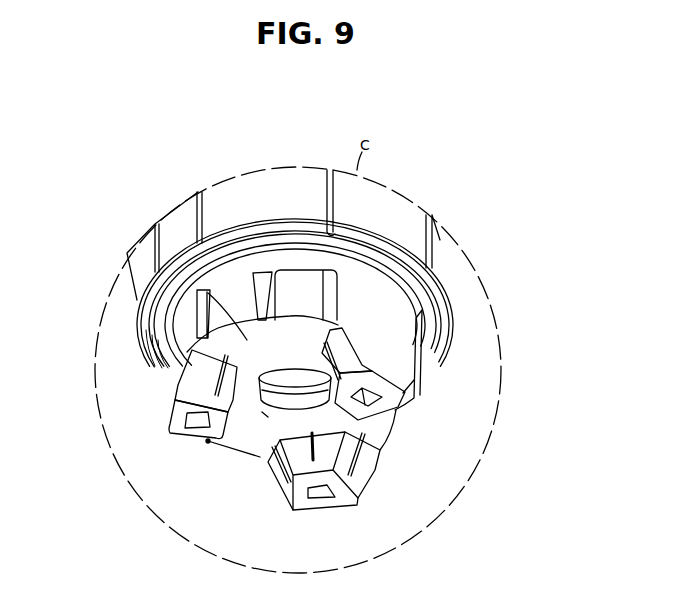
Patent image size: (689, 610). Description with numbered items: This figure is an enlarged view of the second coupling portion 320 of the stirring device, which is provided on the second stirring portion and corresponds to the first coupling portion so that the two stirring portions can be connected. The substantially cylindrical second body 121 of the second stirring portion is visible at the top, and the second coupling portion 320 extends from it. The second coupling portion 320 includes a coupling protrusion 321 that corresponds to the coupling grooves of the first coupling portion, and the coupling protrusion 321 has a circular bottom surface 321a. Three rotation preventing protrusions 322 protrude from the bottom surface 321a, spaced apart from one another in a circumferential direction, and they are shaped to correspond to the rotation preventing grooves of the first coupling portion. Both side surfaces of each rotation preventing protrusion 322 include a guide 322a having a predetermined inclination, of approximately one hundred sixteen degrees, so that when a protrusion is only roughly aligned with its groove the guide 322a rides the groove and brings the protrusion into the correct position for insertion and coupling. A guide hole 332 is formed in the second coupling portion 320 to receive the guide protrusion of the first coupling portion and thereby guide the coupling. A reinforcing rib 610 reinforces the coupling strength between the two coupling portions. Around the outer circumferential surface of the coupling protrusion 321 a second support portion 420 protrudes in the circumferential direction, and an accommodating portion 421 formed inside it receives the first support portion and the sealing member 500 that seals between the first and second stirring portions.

The second body 121 is at (296, 183).
The second support portion 420 is at (438, 280).
The accommodating portion 421 is at (440, 333).
The sealing member 500 is at (150, 337).
The coupling protrusion 321 is at (375, 300).
The bottom surface 321a is at (199, 290).
The reinforcing rib 610 is at (260, 290).
The second coupling portion 320 is at (447, 400).
The rotation preventing protrusion 322 is at (370, 478).
The guide 322a is at (199, 375).
The guide hole 332 is at (268, 417).